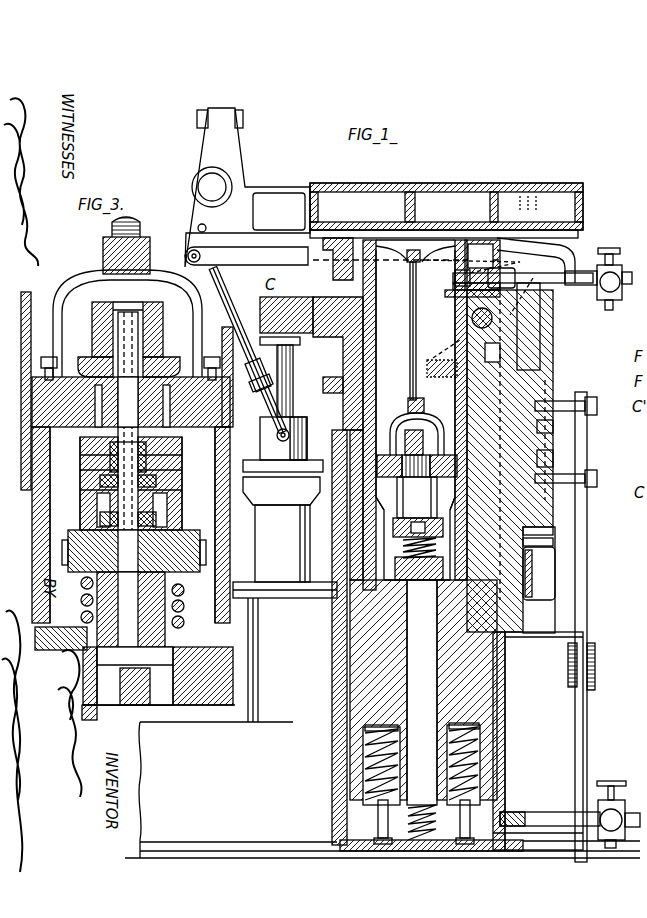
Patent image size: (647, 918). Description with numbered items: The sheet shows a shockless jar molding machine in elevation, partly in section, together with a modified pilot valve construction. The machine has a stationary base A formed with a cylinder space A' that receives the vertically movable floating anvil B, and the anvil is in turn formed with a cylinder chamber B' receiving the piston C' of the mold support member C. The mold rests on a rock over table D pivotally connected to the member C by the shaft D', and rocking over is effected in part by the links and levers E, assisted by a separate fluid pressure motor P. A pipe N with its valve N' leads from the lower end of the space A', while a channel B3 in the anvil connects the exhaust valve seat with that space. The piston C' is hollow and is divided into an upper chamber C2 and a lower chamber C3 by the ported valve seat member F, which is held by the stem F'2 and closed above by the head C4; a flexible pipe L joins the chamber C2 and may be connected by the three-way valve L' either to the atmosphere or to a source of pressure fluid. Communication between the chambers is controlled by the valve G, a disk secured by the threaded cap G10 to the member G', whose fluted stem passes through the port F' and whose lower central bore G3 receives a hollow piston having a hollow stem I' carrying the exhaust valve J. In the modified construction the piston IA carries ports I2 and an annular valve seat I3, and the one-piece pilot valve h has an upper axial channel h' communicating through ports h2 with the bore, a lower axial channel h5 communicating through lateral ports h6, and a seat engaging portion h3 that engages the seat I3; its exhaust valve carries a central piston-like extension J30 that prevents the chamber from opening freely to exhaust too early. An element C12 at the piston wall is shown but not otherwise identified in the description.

In FIG. 1, the stationary base A is at (544, 741).
In FIG. 1, the cylinder space A' is at (514, 741).
In FIG. 1, the floating anvil B is at (492, 436).
In FIG. 1, the cylinder chamber B' is at (290, 637).
In FIG. 3, the channel B3 is at (135, 675).
In FIG. 1, the channel B3 is at (431, 715).
In FIG. 1, the mold support member C is at (406, 409).
In FIG. 3, the piston C' is at (117, 522).
In FIG. 1, the piston C' is at (381, 415).
In FIG. 1, the upper chamber C2 is at (415, 415).
In FIG. 1, the lower chamber C3 is at (387, 545).
In FIG. 1, the head C4 is at (392, 250).
In FIG. 3, the casing wall C12 is at (219, 376).
In FIG. 1, the rock over table D is at (446, 198).
In FIG. 1, the shaft D' is at (247, 187).
In FIG. 1, the links and levers E is at (551, 342).
In FIG. 3, the ported valve seat member F is at (118, 392).
In FIG. 1, the port F' is at (340, 446).
In FIG. 1, the stem F'2 is at (433, 325).
In FIG. 3, the valve G is at (127, 323).
In FIG. 1, the valve G is at (404, 410).
In FIG. 1, the valve member G' is at (417, 475).
In FIG. 3, the lower central bore G3 is at (66, 535).
In FIG. 3, the threaded cap G10 is at (95, 304).
In FIG. 3, the pilot valve h is at (102, 488).
In FIG. 3, the axial channel h' is at (171, 450).
In FIG. 3, the ports h2 is at (165, 460).
In FIG. 3, the valve seat engaging portion h3 is at (170, 501).
In FIG. 3, the axial channel h5 is at (100, 516).
In FIG. 3, the lateral ports h6 is at (98, 496).
In FIG. 3, the hollow stem I' is at (187, 605).
In FIG. 3, the ports I2 is at (96, 478).
In FIG. 3, the annular valve seat I3 is at (50, 458).
In FIG. 3, the piston IA is at (88, 612).
In FIG. 1, the valve J is at (418, 576).
In FIG. 3, the central piston-like extension J30 is at (106, 670).
In FIG. 1, the flexible pipe L is at (508, 283).
In FIG. 1, the three-way valve L' is at (617, 279).
In FIG. 1, the pipe N is at (566, 809).
In FIG. 1, the valve N' is at (618, 799).
In FIG. 1, the fluid pressure motor P is at (258, 548).